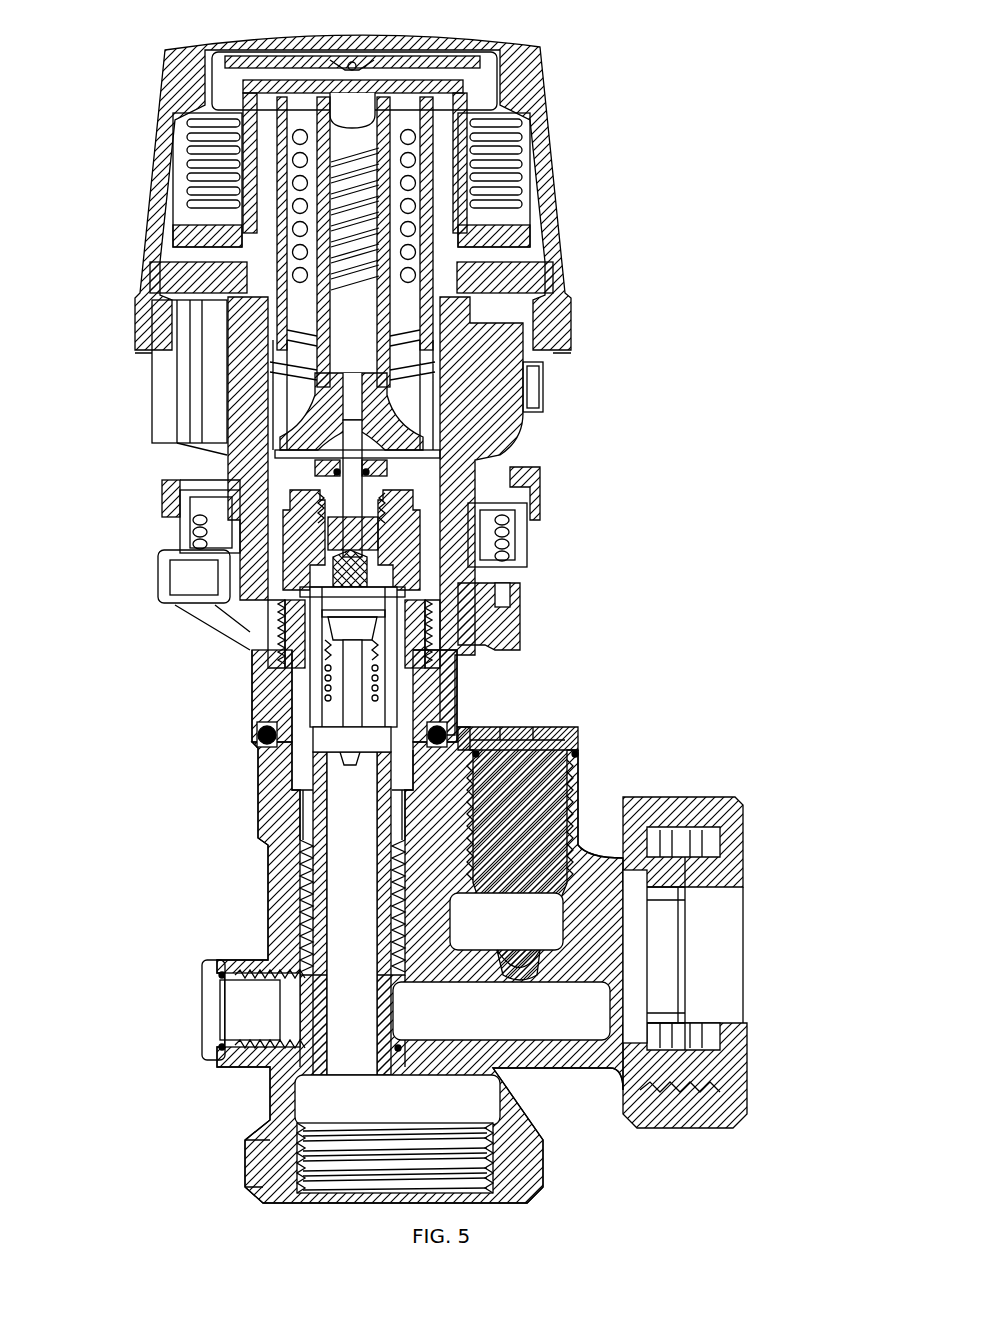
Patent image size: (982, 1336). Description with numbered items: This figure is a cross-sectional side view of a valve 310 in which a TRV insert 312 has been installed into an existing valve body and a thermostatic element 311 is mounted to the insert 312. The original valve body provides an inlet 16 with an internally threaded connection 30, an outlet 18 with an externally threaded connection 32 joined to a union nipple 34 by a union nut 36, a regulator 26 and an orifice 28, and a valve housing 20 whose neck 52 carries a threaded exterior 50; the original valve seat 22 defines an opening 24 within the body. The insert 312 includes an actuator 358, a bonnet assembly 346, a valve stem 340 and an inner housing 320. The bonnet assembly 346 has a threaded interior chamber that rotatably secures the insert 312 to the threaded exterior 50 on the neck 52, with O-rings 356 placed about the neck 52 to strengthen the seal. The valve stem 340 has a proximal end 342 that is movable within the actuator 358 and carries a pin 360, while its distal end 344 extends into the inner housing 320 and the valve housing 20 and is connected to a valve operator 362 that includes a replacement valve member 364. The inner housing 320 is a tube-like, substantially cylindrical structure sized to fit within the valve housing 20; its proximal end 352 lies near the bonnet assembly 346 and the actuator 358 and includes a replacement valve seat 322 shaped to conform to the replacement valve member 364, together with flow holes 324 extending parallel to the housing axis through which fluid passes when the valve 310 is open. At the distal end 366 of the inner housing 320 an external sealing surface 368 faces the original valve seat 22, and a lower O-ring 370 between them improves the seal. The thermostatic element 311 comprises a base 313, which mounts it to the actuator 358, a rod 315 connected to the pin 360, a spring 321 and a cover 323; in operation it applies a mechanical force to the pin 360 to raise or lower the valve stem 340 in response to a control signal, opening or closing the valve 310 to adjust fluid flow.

The thermostatic element 311 is at (556, 33).
The cover 323 is at (185, 158).
The spring 321 is at (392, 220).
The rod 315 is at (543, 374).
The pin 360 is at (352, 435).
The base 313 is at (473, 455).
The actuator 358 is at (510, 470).
The valve 310 is at (667, 565).
The TRV insert 312 is at (532, 592).
The neck 52 is at (460, 624).
The bonnet assembly 346 is at (445, 654).
The threaded exterior 50 is at (445, 690).
The O-rings 356 is at (260, 733).
The flow holes 324 is at (318, 780).
The regulator 26 is at (570, 727).
The union nut 36 is at (667, 797).
The union nipple 34 is at (705, 833).
The outlet 18 is at (757, 962).
The proximal end of valve stem 342 is at (335, 640).
The valve stem 340 is at (350, 670).
The proximal end of inner housing 352 is at (345, 700).
The distal end of valve stem 344 is at (350, 722).
The valve operator 362 is at (318, 742).
The replacement valve seat 322 is at (302, 762).
The replacement valve member 364 is at (330, 792).
The valve housing 20 is at (231, 868).
The inner housing 320 is at (300, 918).
The distal end of inner housing 366 is at (310, 1016).
The external sealing surface 368 is at (310, 1040).
The lower O-ring 370 is at (313, 1067).
The valve seat 22 is at (292, 1100).
The opening 24 is at (352, 1082).
The inlet 16 is at (375, 1218).
The orifice 28 is at (519, 986).
The externally threaded connection 32 is at (650, 1108).
The internally threaded connection 30 is at (515, 1195).